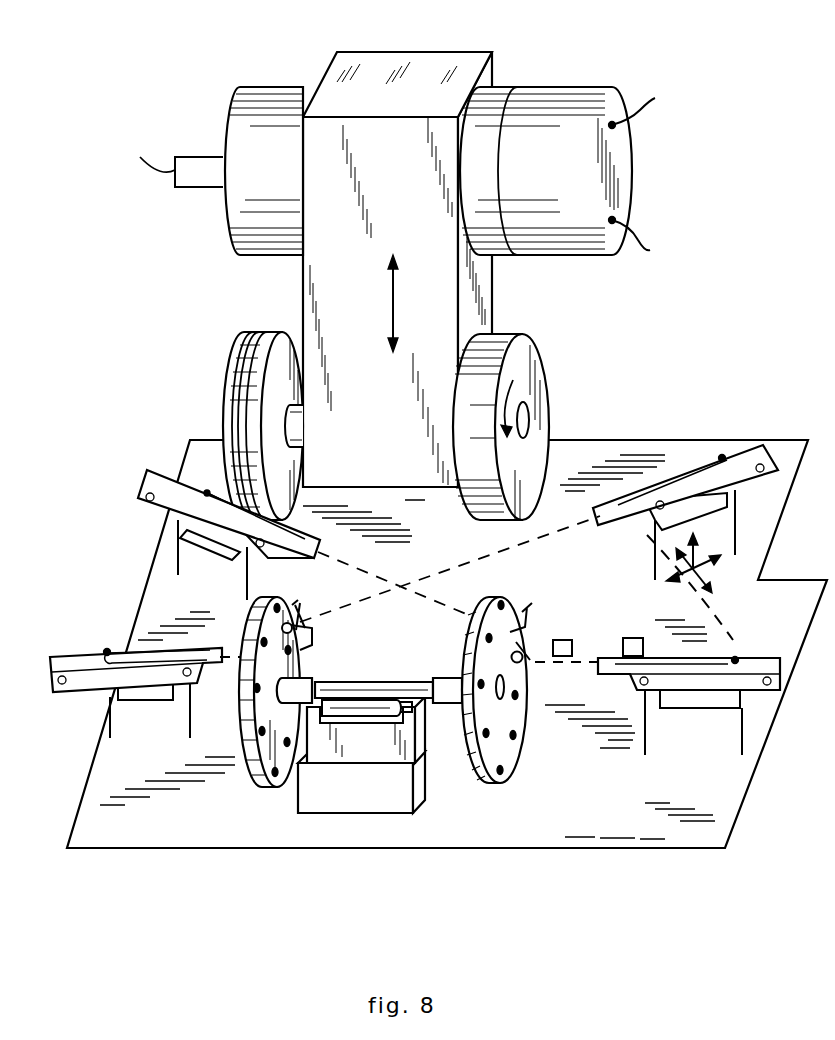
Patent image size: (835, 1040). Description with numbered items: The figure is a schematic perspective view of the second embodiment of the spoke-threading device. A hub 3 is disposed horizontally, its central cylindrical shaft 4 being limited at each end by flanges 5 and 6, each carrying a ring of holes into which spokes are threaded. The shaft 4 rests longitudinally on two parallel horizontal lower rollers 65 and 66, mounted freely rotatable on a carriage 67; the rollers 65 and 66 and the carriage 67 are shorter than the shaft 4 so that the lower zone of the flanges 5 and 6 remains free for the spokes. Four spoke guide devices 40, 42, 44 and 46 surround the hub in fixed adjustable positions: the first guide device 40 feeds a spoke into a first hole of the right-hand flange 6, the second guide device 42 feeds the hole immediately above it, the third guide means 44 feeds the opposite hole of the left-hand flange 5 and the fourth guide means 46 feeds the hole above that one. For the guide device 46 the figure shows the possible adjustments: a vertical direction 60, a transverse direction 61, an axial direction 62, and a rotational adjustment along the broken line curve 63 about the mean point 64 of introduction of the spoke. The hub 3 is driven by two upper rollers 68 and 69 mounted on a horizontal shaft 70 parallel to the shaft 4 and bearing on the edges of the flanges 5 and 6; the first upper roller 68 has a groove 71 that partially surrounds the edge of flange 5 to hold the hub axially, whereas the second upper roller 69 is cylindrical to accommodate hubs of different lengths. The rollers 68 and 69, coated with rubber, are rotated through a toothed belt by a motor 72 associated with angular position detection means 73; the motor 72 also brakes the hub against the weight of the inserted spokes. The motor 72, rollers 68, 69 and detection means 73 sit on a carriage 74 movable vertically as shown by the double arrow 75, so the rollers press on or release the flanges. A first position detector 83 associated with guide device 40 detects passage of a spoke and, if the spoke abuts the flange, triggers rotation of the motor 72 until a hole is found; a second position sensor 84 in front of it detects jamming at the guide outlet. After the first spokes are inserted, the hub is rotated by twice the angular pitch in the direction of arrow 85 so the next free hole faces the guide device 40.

The hub 3 is at (530, 757).
The central cylindrical shaft 4 is at (358, 685).
The flange 5 is at (270, 747).
The flange 6 is at (478, 778).
The first guide device 40 is at (755, 660).
The second guide device 42 is at (148, 470).
The third guide means 44 is at (88, 655).
The fourth guide means 46 is at (738, 448).
The vertical direction 60 is at (696, 560).
The transverse direction 61 is at (708, 570).
The axial direction 62 is at (690, 582).
The broken line curve 63 is at (730, 610).
The mean point of introduction 64 is at (292, 628).
The lower roller 65 is at (372, 716).
The lower roller 66 is at (410, 700).
The carriage 67 is at (342, 750).
The first upper roller 68 is at (229, 401).
The second upper roller 69 is at (528, 400).
The horizontal shaft 70 is at (530, 425).
The groove 71 is at (260, 330).
The motor 72 is at (554, 110).
The angular position detection means 73 is at (275, 108).
The carriage 74 is at (434, 67).
The double arrow 75 is at (400, 307).
The first position detector 83 is at (633, 638).
The second position sensor 84 is at (562, 640).
The arrow 85 is at (518, 385).